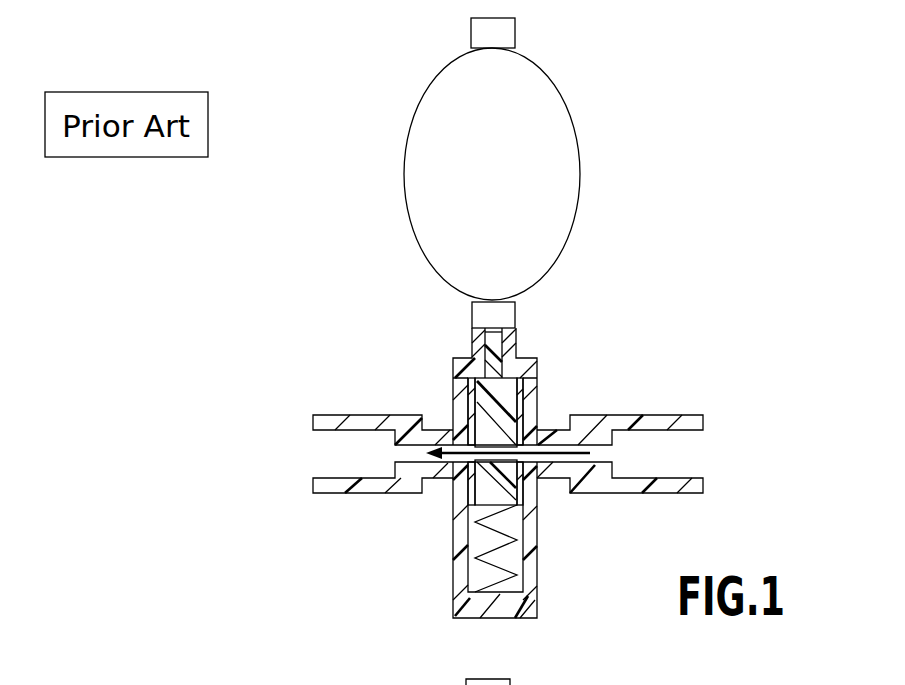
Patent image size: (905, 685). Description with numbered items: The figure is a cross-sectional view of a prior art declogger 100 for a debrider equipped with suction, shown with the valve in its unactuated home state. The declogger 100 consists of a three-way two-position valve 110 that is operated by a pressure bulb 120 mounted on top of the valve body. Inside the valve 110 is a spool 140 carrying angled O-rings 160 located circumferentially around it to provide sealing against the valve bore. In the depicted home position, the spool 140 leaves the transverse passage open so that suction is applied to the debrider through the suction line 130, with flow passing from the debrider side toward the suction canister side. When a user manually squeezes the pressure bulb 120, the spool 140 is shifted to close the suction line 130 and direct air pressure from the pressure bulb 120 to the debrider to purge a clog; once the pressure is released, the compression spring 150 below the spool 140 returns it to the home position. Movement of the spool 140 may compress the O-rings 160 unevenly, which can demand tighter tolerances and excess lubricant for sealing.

The declogger 100 is at (753, 146).
The 3-way 2-position valve 110 is at (455, 576).
The pressure bulb 120 is at (428, 93).
The suction line 130 is at (362, 496).
The spool 140 is at (508, 382).
The compression spring 150 is at (500, 556).
The angled O-rings 160 is at (473, 410).